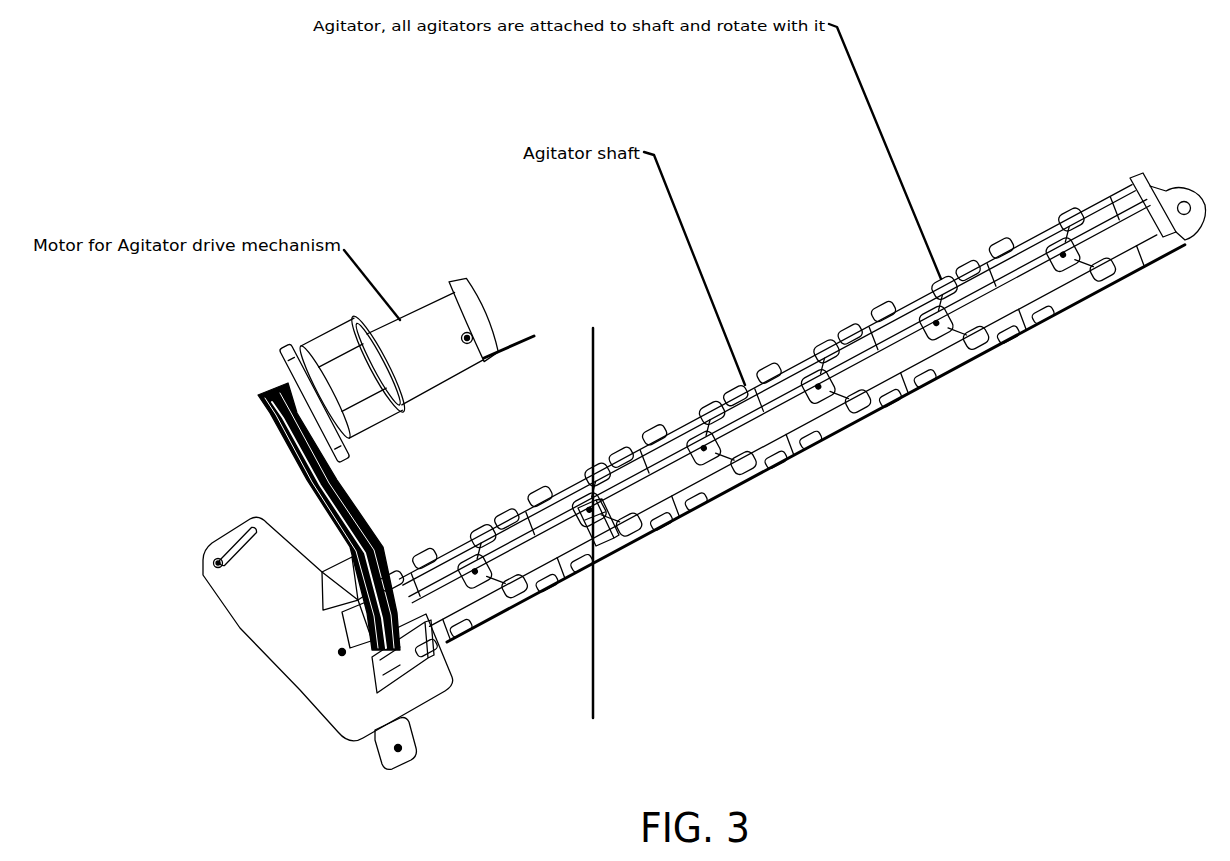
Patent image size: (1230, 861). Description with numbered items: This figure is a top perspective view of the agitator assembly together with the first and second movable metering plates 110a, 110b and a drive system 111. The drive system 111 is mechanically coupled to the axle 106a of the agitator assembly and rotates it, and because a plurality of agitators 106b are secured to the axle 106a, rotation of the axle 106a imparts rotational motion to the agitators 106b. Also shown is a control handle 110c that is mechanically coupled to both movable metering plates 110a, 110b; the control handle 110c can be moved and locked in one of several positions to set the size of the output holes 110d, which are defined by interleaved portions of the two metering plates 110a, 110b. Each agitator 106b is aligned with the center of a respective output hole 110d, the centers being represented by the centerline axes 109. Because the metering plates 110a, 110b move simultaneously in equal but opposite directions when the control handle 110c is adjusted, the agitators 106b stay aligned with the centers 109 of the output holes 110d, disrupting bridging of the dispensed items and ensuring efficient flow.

The axle 106a is at (670, 463).
The agitators 106b is at (467, 545).
The centerline axes 109 is at (596, 647).
The first movable metering plate 110a is at (607, 540).
The second movable metering plate 110b is at (583, 493).
The control handle 110c is at (378, 750).
The output holes 110d is at (577, 518).
The drive system 111 is at (228, 395).